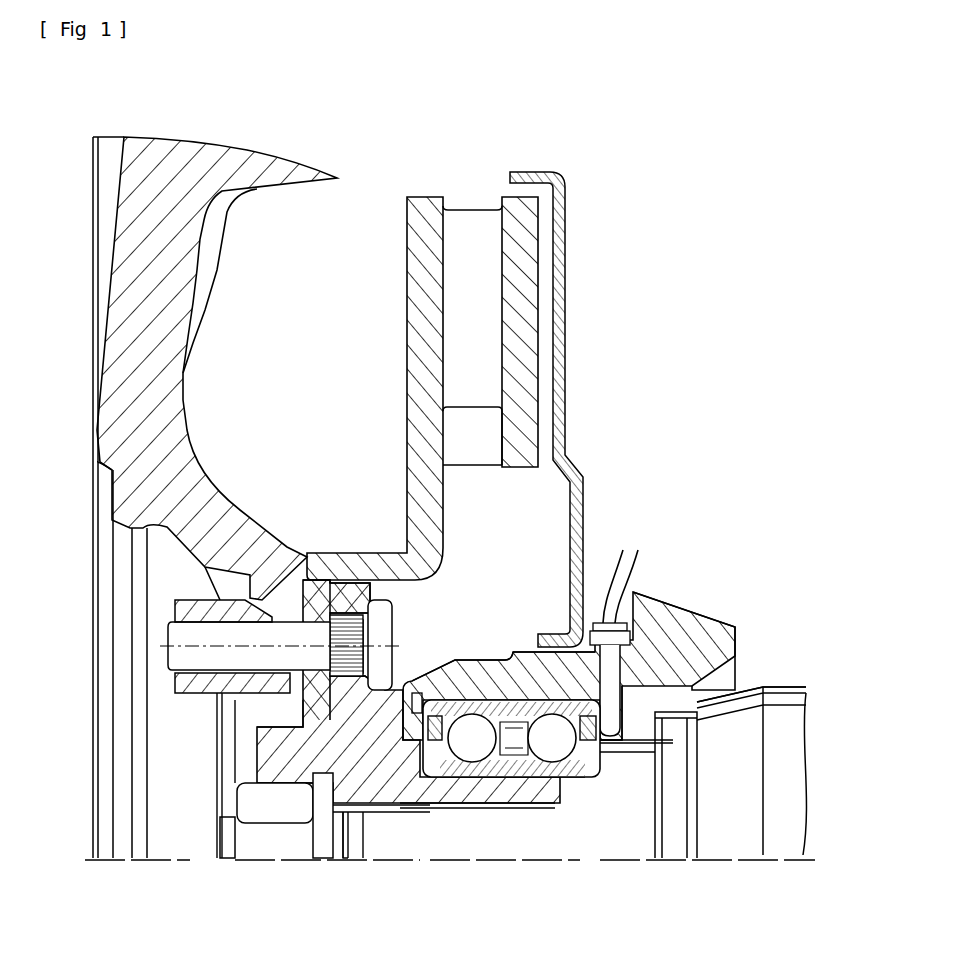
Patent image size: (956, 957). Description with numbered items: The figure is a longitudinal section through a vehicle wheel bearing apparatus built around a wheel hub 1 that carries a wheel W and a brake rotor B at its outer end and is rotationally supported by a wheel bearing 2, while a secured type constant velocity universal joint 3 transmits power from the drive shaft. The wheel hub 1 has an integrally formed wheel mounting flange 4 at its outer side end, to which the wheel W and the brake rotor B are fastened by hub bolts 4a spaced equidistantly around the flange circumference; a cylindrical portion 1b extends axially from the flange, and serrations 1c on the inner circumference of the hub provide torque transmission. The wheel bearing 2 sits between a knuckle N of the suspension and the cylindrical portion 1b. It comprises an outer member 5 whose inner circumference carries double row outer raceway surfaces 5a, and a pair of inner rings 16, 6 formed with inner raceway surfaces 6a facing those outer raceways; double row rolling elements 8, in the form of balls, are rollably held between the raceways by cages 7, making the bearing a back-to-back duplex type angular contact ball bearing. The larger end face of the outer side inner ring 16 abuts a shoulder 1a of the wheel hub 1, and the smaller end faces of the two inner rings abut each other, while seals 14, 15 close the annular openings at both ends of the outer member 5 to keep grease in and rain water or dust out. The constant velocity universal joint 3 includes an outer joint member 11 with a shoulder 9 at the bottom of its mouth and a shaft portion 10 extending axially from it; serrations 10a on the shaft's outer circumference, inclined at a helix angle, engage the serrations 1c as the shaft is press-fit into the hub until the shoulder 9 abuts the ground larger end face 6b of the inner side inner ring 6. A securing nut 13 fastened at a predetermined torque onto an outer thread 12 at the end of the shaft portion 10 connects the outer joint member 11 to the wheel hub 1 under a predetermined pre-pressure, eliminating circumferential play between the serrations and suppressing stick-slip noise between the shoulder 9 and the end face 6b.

The wheel W is at (178, 192).
The brake rotor B is at (432, 222).
The knuckle N is at (688, 632).
The wheel hub 1 is at (257, 753).
The shoulder 1a is at (315, 772).
The cylindrical portion 1b is at (492, 762).
The serrations 1c is at (410, 810).
The wheel bearing 2 is at (492, 687).
The constant velocity universal joint 3 is at (777, 666).
The wheel mounting flange 4 is at (345, 600).
The hub bolts 4a is at (263, 640).
The outer member 5 is at (528, 675).
The outer raceway surfaces 5a is at (452, 662).
The inner ring 6 is at (520, 791).
The inner raceway surfaces 6a is at (470, 742).
The larger end face 6b is at (604, 762).
The cages 7 is at (525, 747).
The rolling elements 8 is at (521, 700).
The shoulder 9 is at (625, 786).
The shaft portion 10 is at (396, 839).
The serrations 10a is at (357, 817).
The outer joint member 11 is at (746, 683).
The outer thread 12 is at (222, 830).
The securing nut 13 is at (277, 825).
The seal 14 is at (268, 747).
The seal 15 is at (662, 645).
The inner ring 16 is at (437, 800).